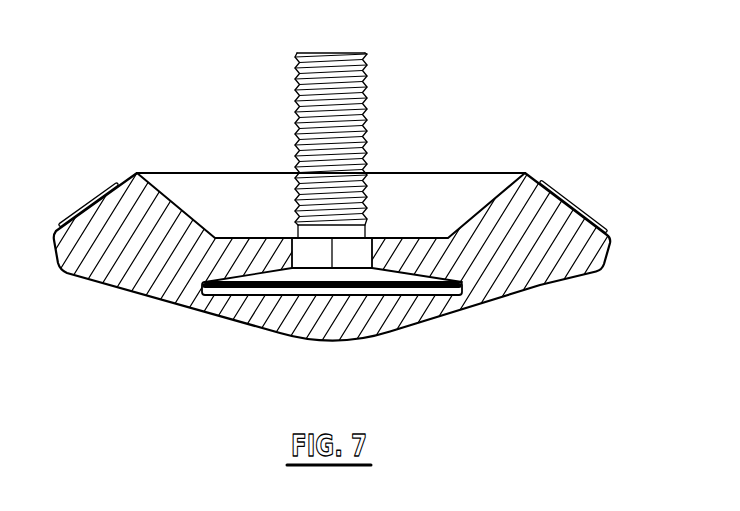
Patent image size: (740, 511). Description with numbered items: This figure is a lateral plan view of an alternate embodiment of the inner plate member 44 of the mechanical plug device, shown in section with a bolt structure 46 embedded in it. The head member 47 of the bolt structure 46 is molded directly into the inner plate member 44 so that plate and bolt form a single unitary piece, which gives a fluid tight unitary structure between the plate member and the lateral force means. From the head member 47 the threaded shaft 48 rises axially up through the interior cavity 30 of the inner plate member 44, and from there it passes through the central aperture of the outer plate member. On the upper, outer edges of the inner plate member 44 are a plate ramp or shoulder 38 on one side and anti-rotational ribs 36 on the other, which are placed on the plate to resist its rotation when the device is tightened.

The interior cavity 30 is at (435, 193).
The anti-rotational ribs 36 is at (565, 193).
The plate ramp or shoulder 38 is at (118, 181).
The inner plate member 44 is at (122, 273).
The bolt structure 46 is at (274, 123).
The head member 47 is at (358, 277).
The threaded shaft 48 is at (367, 92).